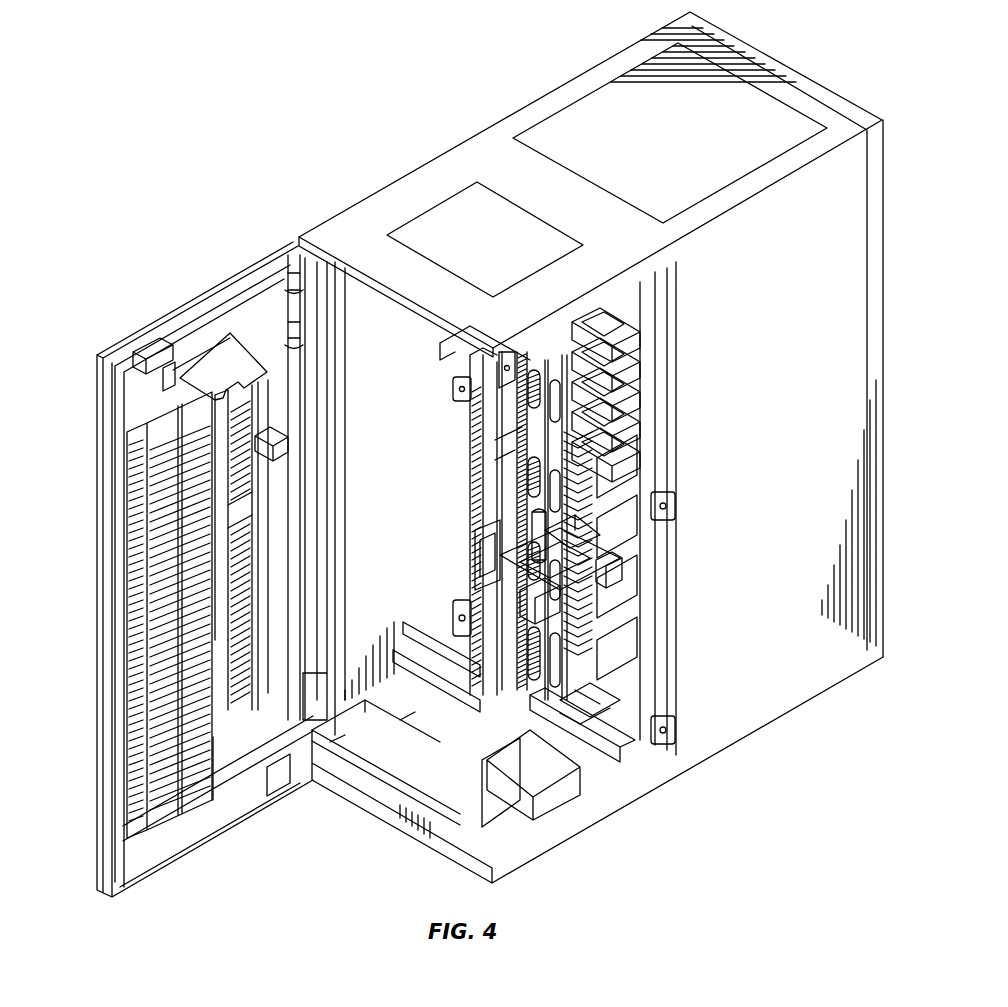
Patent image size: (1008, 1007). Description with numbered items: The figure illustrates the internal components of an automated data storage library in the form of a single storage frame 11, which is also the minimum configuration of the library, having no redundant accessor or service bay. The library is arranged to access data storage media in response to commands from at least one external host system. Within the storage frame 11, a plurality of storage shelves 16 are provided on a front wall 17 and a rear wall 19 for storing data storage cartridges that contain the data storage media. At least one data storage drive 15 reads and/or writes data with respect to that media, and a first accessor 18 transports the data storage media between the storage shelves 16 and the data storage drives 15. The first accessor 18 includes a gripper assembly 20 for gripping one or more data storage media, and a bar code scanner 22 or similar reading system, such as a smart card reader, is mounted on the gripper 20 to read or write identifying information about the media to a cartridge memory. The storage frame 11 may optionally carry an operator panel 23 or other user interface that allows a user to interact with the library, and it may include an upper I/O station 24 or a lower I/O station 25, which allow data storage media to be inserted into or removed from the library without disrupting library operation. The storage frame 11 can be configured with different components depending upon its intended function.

The storage frame 11 is at (339, 78).
The data storage drive 15 is at (622, 313).
The storage shelves 16 is at (122, 684).
The front wall 17 is at (92, 488).
The first accessor 18 is at (590, 770).
The rear wall 19 is at (465, 360).
The gripper assembly 20 is at (622, 562).
The bar code scanner 22 is at (512, 586).
The operator panel 23 is at (289, 344).
The upper I/O station 24 is at (245, 400).
The lower I/O station 25 is at (254, 581).